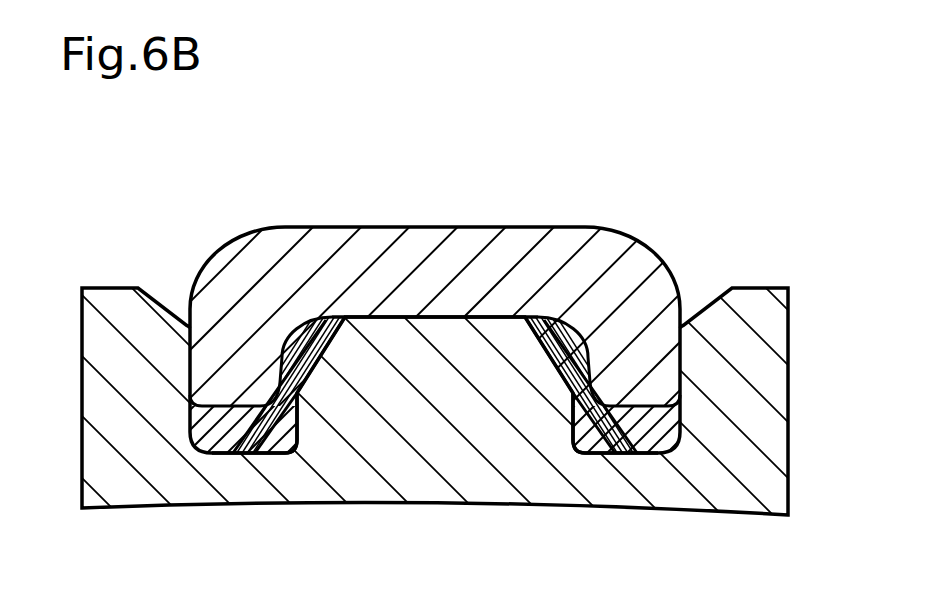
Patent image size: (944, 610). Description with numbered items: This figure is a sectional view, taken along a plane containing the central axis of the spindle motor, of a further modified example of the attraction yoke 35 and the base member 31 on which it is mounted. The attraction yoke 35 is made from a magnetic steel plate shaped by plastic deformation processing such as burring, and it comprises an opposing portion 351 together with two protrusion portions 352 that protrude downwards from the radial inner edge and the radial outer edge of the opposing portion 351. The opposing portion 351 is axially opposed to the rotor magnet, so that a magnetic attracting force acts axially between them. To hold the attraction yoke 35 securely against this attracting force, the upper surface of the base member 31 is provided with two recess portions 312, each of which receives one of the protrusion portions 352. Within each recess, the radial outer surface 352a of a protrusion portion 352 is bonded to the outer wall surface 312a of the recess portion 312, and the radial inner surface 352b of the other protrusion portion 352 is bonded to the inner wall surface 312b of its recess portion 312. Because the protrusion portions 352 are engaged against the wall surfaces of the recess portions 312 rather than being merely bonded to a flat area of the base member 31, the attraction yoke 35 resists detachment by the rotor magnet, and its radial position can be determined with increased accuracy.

The base member 31 is at (427, 485).
The recess portion 312 is at (251, 425).
The outer wall surface 312a is at (200, 441).
The inner wall surface 312b is at (672, 440).
The attraction yoke 35 is at (449, 263).
The opposing portion 351 is at (437, 250).
The protrusion portion 352 is at (239, 340).
The radial outer surface 352a is at (178, 384).
The radial inner surface 352b is at (692, 382).